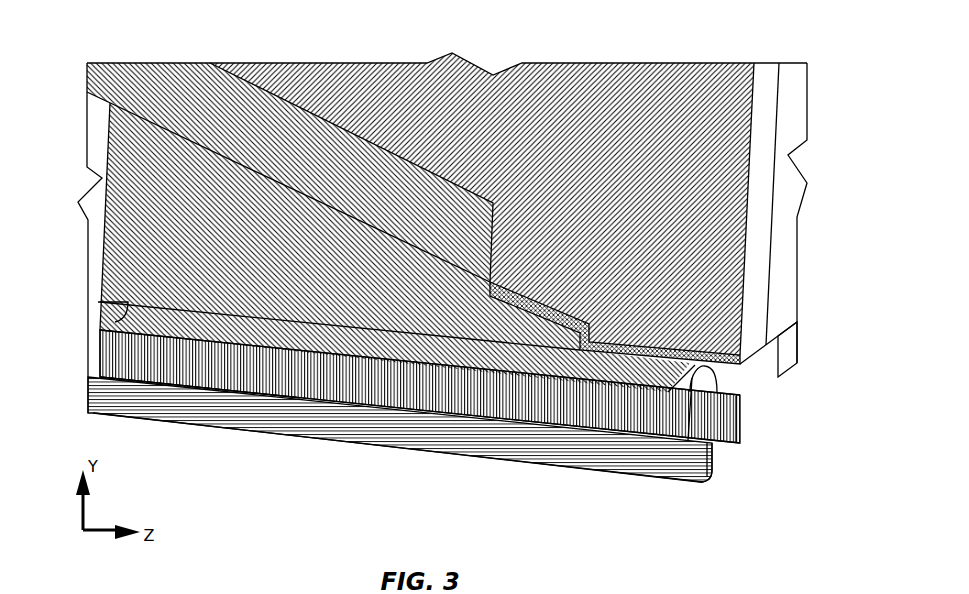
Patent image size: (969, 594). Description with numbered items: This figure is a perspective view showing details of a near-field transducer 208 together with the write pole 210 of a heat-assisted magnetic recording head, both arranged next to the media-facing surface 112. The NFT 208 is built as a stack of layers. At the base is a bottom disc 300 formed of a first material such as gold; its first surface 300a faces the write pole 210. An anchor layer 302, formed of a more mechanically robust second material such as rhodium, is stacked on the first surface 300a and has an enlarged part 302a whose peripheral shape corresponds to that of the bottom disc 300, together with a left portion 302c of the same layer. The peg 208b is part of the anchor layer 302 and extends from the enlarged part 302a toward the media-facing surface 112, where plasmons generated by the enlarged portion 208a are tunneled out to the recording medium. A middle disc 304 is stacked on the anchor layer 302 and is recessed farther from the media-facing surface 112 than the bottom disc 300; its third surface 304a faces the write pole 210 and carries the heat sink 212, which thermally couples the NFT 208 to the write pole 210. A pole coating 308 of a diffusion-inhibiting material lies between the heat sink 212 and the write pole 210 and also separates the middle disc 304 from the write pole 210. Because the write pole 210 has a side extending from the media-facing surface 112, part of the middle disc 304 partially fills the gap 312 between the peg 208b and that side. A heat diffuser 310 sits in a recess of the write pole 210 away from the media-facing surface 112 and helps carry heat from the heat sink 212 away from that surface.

The media-facing surface 112 is at (790, 362).
The near-field transducer 208 is at (546, 488).
The enlarged portion 208a is at (415, 477).
The peg 208b is at (740, 445).
The write pole 210 is at (762, 215).
The heat sink 212 is at (105, 231).
The bottom disc 300 is at (363, 437).
The first surface 300a is at (317, 395).
The anchor layer 302 is at (140, 368).
The enlarged part 302a is at (720, 375).
The pad strip left portion 302c is at (208, 367).
The middle disc 304 is at (497, 358).
The third surface 304a is at (115, 322).
The pole coating 308 is at (758, 347).
The heat diffuser 310 is at (170, 70).
The gap 312 is at (688, 440).